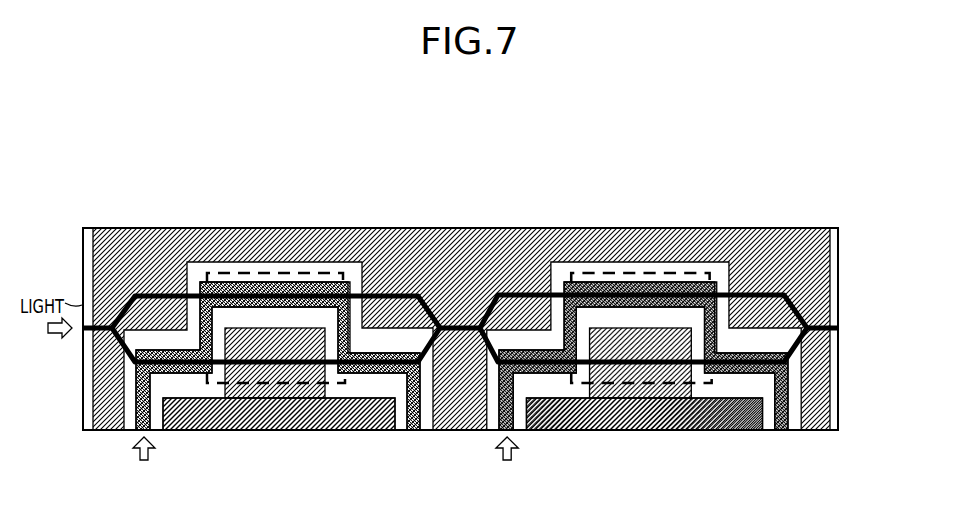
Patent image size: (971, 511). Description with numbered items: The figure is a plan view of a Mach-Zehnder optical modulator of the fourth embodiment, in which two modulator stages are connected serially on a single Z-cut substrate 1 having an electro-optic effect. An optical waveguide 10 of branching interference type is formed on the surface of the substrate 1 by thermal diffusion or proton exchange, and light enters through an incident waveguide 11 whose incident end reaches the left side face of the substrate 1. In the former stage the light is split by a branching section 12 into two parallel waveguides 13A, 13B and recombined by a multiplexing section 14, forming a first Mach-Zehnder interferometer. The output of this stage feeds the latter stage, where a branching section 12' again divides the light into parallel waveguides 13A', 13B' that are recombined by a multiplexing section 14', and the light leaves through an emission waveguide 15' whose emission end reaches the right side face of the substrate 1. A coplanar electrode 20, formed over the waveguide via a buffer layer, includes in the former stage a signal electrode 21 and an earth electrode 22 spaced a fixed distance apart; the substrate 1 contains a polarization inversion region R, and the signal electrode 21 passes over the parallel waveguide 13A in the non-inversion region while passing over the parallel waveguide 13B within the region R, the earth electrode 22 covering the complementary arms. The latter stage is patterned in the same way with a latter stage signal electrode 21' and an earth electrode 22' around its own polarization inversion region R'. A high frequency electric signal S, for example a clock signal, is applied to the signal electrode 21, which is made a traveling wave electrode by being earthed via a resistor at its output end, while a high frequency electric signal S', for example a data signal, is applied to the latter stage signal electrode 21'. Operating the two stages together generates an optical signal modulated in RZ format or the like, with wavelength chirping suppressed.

The substrate 1 is at (840, 273).
The optical waveguide 10 is at (88, 339).
The incident waveguide 11 is at (82, 304).
The branching section 12 is at (251, 278).
The branching section 12' is at (642, 278).
The parallel waveguide 13A is at (279, 432).
The parallel waveguide 13A' is at (644, 433).
The parallel waveguide 13B is at (274, 312).
The parallel waveguide 13B' is at (644, 312).
The multiplexing section 14 is at (447, 261).
The multiplexing section 14' is at (828, 261).
The emission waveguide 15' is at (860, 329).
The coplanar electrode 20 is at (97, 431).
The signal electrode 21 is at (245, 389).
The latter stage signal electrode 21' is at (610, 392).
The earth electrode 22 is at (295, 388).
The earth electrode 22' is at (643, 387).
The polarization inversion region R is at (275, 402).
The polarization inversion region R' is at (641, 402).
The high frequency electric signal S is at (144, 459).
The high frequency electric signal S' is at (508, 462).